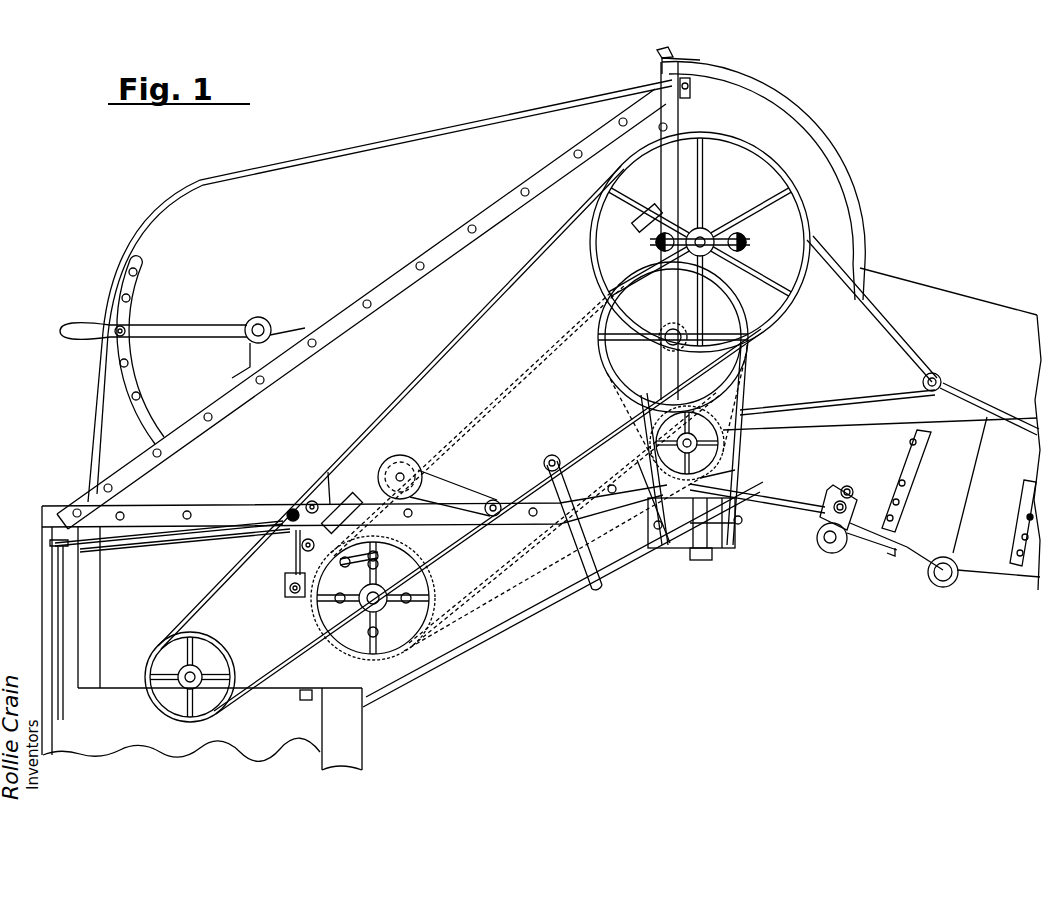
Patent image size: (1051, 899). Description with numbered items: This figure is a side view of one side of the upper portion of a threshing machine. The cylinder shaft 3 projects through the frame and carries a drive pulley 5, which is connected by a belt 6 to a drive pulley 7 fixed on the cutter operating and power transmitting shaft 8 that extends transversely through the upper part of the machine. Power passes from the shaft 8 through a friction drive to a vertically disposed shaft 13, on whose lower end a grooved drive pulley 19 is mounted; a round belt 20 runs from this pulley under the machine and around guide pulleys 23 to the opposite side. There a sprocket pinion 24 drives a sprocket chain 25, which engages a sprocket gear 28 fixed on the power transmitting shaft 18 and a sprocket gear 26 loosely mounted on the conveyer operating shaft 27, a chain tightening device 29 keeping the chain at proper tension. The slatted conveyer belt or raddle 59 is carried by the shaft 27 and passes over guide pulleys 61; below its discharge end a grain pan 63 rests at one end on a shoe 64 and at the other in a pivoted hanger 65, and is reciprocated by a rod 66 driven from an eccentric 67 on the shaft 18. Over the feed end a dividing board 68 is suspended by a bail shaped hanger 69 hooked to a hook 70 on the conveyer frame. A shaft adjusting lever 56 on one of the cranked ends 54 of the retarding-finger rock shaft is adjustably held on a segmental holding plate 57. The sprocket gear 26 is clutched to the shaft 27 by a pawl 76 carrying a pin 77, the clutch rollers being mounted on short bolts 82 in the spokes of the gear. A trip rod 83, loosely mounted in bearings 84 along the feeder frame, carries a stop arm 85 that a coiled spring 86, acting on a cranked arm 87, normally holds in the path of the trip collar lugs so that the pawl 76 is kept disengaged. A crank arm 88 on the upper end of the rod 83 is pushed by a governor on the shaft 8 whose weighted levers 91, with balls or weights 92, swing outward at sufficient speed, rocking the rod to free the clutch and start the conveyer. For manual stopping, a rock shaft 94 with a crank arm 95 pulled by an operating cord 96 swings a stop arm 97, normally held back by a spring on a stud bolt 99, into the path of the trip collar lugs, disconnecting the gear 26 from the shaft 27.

The shaft 3 is at (185, 685).
The drive pulley 5 is at (214, 645).
The belt 6 is at (308, 658).
The drive pulley 7 is at (782, 192).
The cutter operating and power transmitting shaft 8 is at (705, 232).
The vertically disposed shaft 13 is at (700, 548).
The power transmitting shaft 18 is at (752, 428).
The grooved drive pulley 19 is at (684, 562).
The round belt 20 is at (742, 398).
The guide pulleys 23 is at (662, 548).
The sprocket pinion 24 is at (658, 326).
The sprocket chain 25 is at (510, 430).
The sprocket gear 26 is at (437, 594).
The conveyer operating shaft 27 is at (385, 608).
The sprocket gear 28 is at (726, 456).
The chain tightening device 29 is at (400, 455).
The cranked outer ends 54 is at (266, 320).
The shaft adjusting lever 56 is at (165, 326).
The segmental holding plate 57 is at (146, 402).
The slatted conveyer belt or raddle 59 is at (806, 520).
The guide pulleys 61 is at (836, 552).
The grain pan 63 is at (480, 630).
The shoe 64 is at (382, 690).
The hanger 65 is at (600, 562).
The reciprocating rod 66 is at (550, 455).
The eccentric 67 is at (727, 476).
The dividing board 68 is at (893, 288).
The bail shaped hanger 69 is at (838, 165).
The hook 70 is at (668, 50).
The pawl 76 is at (300, 598).
The laterally projecting pin 77 is at (400, 556).
The short bolts 82 is at (438, 582).
The trip rod 83 is at (508, 372).
The bearings 84 is at (342, 505).
The stop arm 85 is at (392, 470).
The coiled spring 86 is at (312, 500).
The cranked arm 87 is at (328, 500).
The crank arm 88 is at (702, 228).
The levers 91 is at (744, 238).
The balls or weights 92 is at (745, 246).
The rock shaft 94 is at (298, 560).
The crank arm 95 is at (290, 511).
The operating cord 96 is at (132, 530).
The stop arm 97 is at (283, 537).
The stud bolt 99 is at (262, 558).